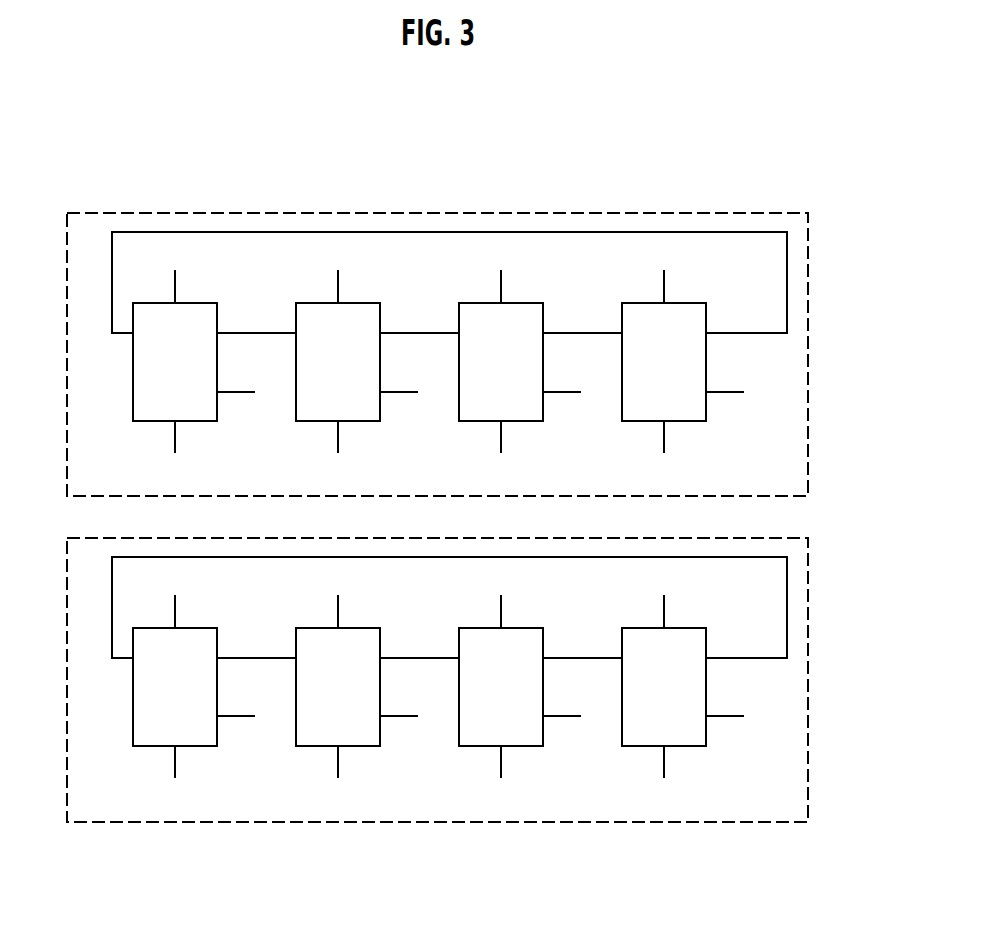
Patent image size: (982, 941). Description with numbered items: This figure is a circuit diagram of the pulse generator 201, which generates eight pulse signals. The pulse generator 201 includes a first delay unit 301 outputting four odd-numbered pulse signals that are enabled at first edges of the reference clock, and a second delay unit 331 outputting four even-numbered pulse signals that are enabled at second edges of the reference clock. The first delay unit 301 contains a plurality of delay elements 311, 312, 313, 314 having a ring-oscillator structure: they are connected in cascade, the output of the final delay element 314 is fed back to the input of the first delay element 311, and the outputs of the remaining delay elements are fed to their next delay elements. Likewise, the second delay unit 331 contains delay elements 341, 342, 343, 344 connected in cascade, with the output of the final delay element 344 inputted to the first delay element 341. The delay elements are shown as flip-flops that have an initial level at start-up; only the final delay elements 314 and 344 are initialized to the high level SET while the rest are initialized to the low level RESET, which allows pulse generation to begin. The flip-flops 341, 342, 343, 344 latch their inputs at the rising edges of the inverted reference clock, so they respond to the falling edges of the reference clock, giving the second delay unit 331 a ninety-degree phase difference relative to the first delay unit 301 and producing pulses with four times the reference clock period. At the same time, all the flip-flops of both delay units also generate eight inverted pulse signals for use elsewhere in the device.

The pulse generator 201 is at (653, 165).
The first delay unit 301 is at (753, 213).
The second delay unit 331 is at (753, 538).
The first delay element 311 is at (183, 303).
The delay element 312 is at (346, 303).
The delay element 313 is at (509, 303).
The final delay element 314 is at (672, 303).
The first delay element 341 is at (183, 628).
The delay element 342 is at (346, 628).
The delay element 343 is at (509, 628).
The final delay element 344 is at (672, 628).